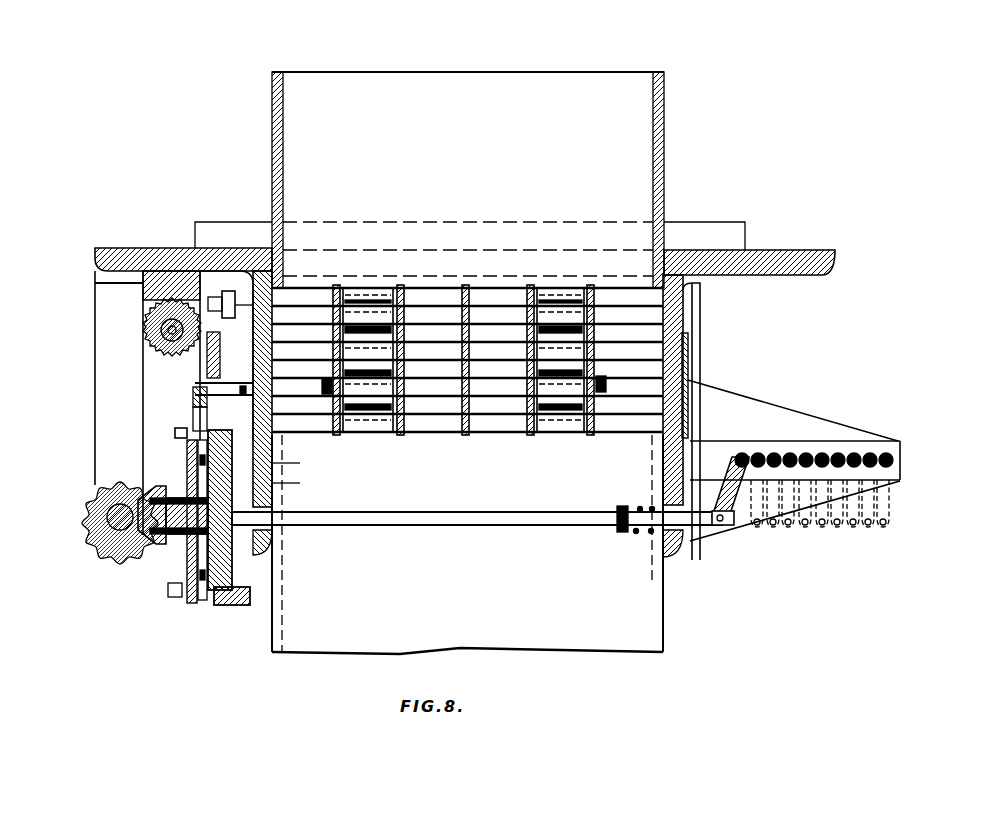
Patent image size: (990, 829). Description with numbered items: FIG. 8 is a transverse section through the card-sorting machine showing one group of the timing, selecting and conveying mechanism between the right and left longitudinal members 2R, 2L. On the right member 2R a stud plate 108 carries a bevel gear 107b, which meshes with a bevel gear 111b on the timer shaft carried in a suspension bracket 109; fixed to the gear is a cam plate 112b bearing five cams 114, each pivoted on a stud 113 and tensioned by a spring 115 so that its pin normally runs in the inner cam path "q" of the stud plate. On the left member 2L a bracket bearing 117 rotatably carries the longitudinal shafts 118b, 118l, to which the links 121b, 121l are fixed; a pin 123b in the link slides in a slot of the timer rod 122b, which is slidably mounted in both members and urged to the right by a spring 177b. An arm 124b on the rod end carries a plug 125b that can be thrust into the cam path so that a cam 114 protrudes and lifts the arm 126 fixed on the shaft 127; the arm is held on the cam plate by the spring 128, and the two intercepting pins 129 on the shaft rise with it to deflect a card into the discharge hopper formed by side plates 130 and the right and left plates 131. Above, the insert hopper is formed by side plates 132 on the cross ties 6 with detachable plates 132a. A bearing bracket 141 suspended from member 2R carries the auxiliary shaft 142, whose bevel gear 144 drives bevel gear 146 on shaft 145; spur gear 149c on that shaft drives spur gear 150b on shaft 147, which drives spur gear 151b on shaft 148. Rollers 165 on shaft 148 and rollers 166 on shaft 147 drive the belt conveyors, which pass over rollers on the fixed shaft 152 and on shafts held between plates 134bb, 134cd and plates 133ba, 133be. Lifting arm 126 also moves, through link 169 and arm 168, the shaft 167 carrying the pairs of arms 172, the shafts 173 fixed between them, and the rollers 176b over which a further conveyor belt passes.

The cross tie 6 is at (232, 229).
The longitudinal member 2R is at (106, 238).
The longitudinal member 2L is at (802, 260).
The inner cam path q is at (252, 576).
The bevel gear 107b is at (160, 540).
The stud plate 108 is at (240, 606).
The suspension bracket 109 is at (95, 453).
The bevel gear 111b is at (92, 530).
The cam plate 112b is at (187, 603).
The stud 113 is at (187, 438).
The cam 114 is at (225, 612).
The spring 115 is at (170, 597).
The bracket bearing 117 is at (822, 428).
The longitudinal shaft 118b is at (742, 460).
The longitudinal shaft 118l is at (900, 446).
The link 121b is at (740, 525).
The link 121l is at (826, 518).
The timer rod 122b is at (505, 525).
The pin 123b is at (720, 527).
The arm 124b is at (308, 464).
The plug 125b is at (308, 484).
The arm 126 is at (193, 417).
The shaft 127 is at (328, 392).
The spring 128 is at (246, 385).
The intercepting pin 129 is at (612, 376).
The side plate 130 is at (467, 662).
The right and left plate 131 is at (282, 588).
The side plate 132 is at (283, 124).
The right and left plate 132a is at (482, 84).
The end plate 133ba is at (311, 444).
The end plate 133be is at (618, 446).
The plate 134bb is at (436, 343).
The plate 134cd is at (499, 343).
The bearing bracket 141 is at (119, 293).
The auxiliary shaft 142 is at (143, 327).
The bevel gear 144 is at (143, 312).
The shaft 145 is at (322, 330).
The bevel gear 146 is at (207, 350).
The shaft 147 is at (322, 368).
The shaft 148 is at (437, 434).
The spur gear 149c is at (700, 291).
The spur gear 150b is at (690, 356).
The spur gear 151b is at (692, 430).
The shaft 152 is at (458, 288).
The roller 165 is at (463, 370).
The roller 166 is at (404, 376).
The shaft 167 is at (322, 308).
The arm 168 is at (226, 296).
The link 169 is at (177, 397).
The arm 172 is at (392, 288).
The shaft 173 is at (412, 288).
The roller 176b is at (615, 510).
The spring 177b is at (640, 506).